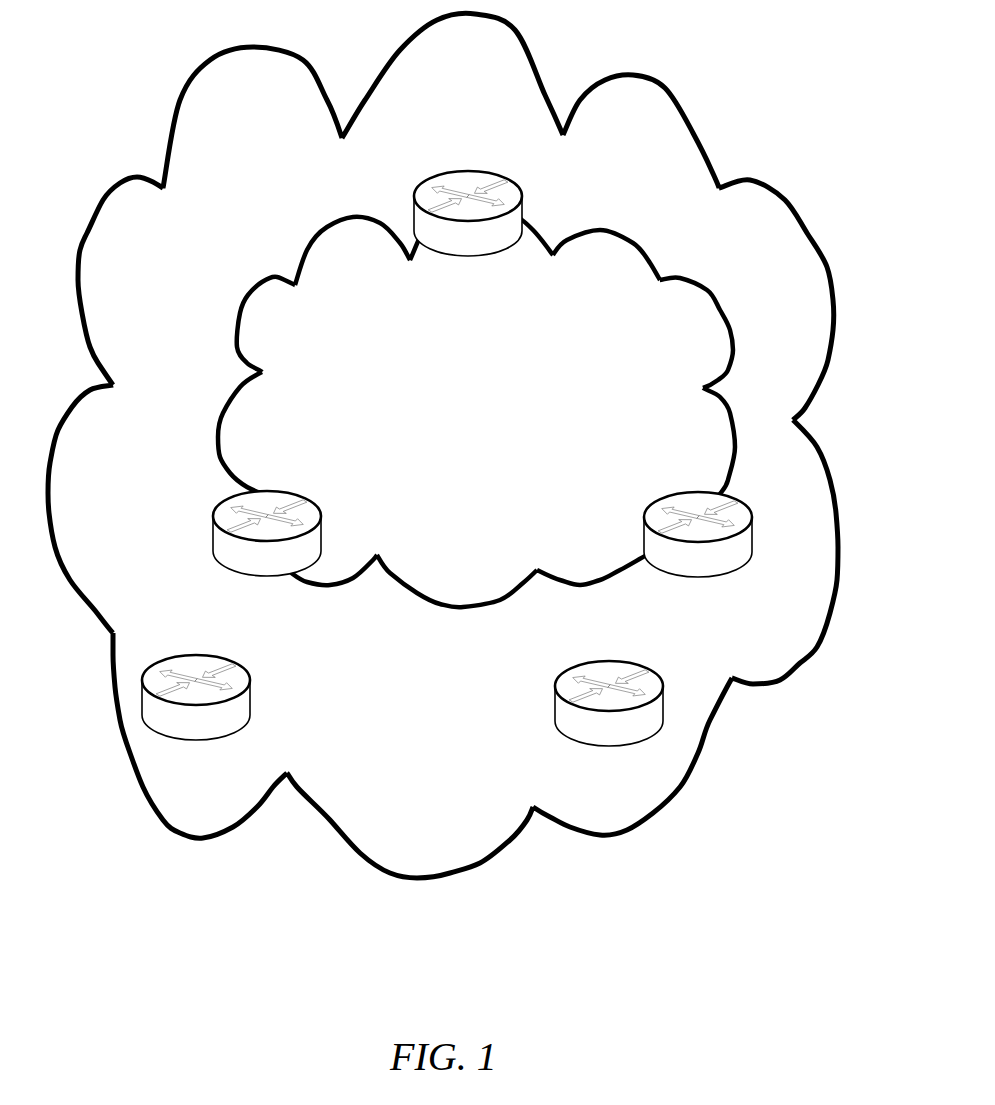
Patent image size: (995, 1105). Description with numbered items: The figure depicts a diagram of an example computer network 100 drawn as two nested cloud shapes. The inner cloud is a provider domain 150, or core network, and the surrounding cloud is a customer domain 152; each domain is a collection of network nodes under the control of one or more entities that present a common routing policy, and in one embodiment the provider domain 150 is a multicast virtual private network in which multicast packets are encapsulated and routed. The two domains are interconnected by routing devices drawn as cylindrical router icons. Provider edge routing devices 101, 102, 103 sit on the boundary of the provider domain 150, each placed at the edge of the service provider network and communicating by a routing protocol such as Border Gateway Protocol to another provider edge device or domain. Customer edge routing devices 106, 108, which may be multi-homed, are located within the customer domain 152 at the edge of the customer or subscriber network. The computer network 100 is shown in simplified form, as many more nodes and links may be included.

The computer network 100 is at (443, 441).
The provider edge routing device 101 is at (213, 537).
The provider edge routing device 102 is at (465, 172).
The provider edge routing device 103 is at (753, 537).
The customer edge routing device 106 is at (252, 690).
The customer edge routing device 108 is at (665, 697).
The provider domain 150 is at (493, 415).
The customer domain 152 is at (489, 705).